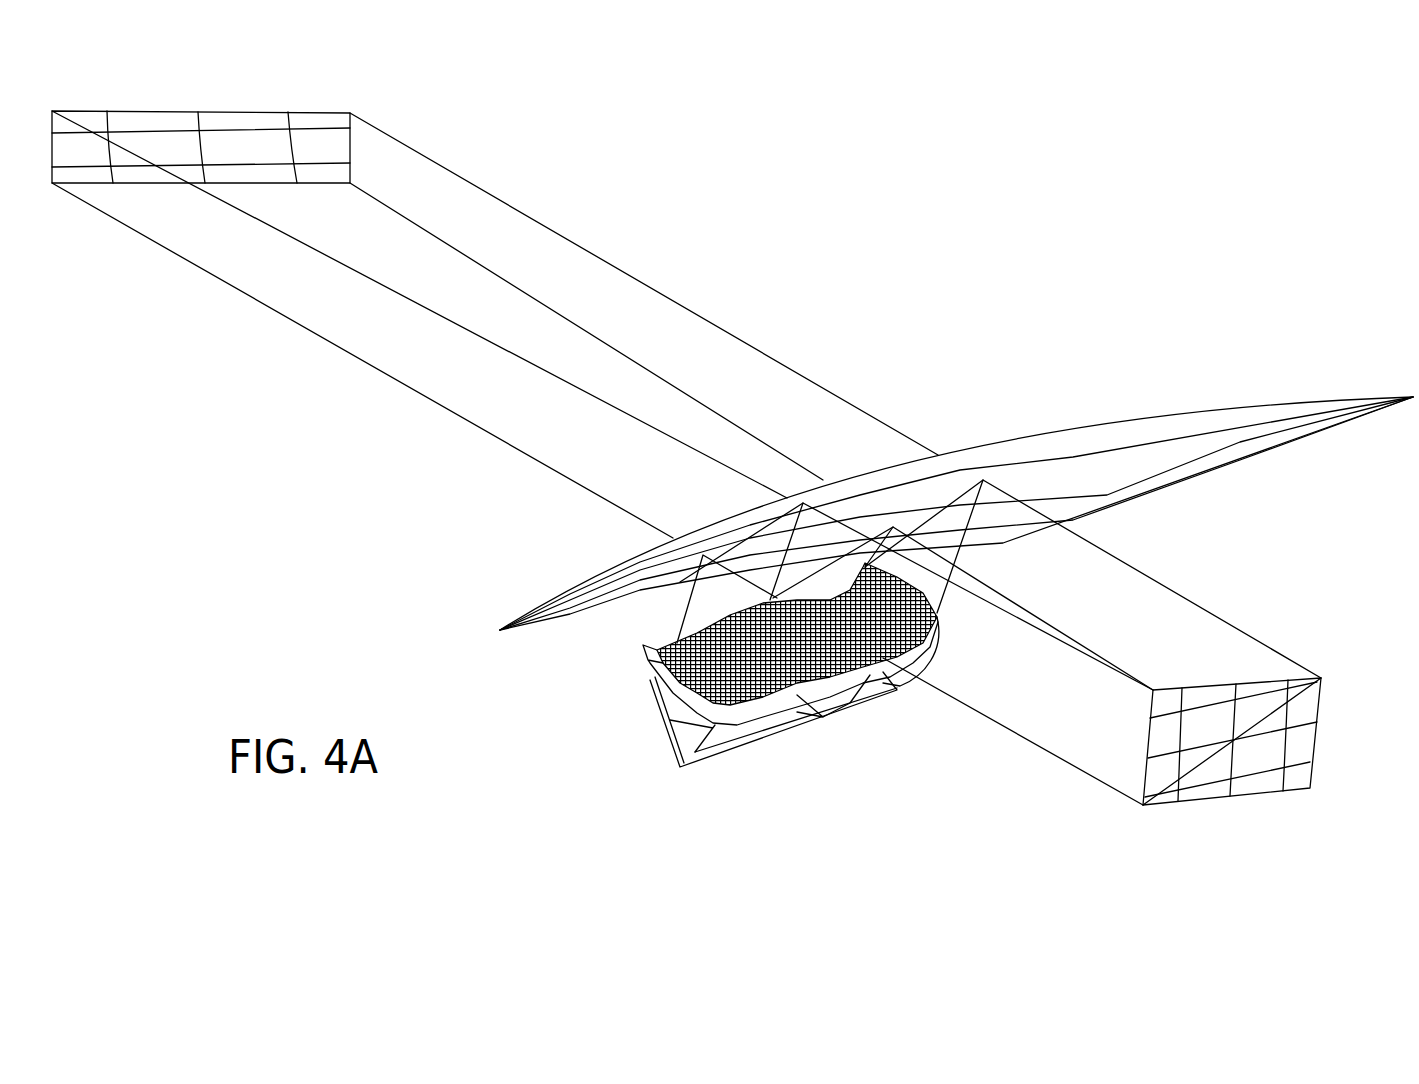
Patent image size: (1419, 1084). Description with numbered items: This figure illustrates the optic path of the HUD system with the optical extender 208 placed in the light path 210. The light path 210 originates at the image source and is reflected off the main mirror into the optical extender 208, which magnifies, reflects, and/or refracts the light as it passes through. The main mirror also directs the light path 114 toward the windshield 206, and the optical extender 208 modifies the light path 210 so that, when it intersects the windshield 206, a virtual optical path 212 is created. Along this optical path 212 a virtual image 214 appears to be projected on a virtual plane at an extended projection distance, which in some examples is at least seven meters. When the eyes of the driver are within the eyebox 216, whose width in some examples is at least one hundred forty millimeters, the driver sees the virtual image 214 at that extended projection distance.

The virtual image 214 is at (317, 123).
The optical path 212 is at (610, 288).
The curved panel 206 is at (1020, 437).
The light path 210 is at (690, 613).
The optical extender 208 is at (897, 680).
The light path 114 is at (707, 763).
The eyebox 216 is at (1302, 745).